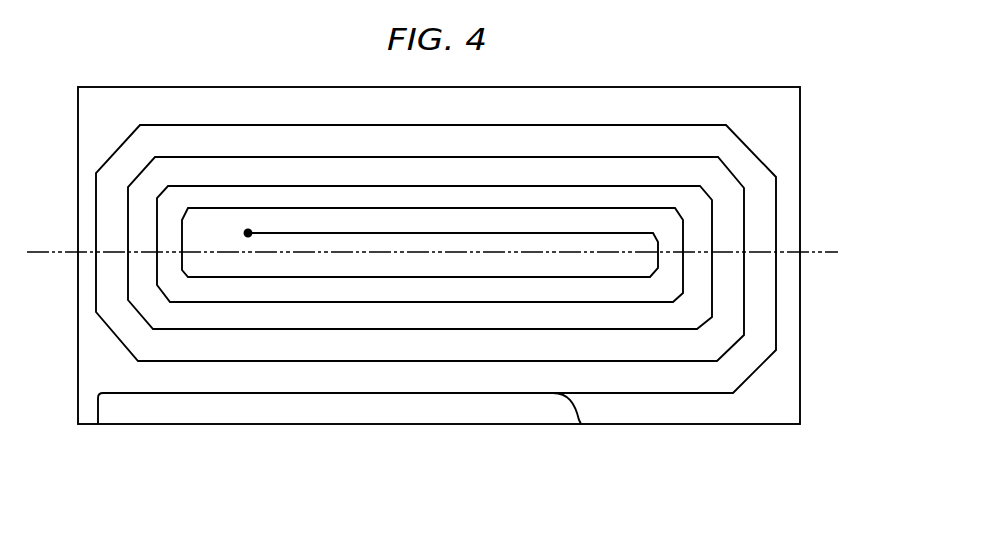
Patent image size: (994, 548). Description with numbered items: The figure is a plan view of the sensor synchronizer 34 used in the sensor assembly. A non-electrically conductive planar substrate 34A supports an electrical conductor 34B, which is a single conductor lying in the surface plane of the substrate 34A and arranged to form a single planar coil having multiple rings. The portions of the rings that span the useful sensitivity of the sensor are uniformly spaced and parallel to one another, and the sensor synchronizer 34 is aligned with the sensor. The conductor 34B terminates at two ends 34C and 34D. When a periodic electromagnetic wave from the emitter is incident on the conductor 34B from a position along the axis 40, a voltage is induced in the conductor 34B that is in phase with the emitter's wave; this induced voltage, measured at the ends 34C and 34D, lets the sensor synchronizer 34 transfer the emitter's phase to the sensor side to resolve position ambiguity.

The sensor synchronizer 34 is at (713, 496).
The non-electrically conductive planar substrate 34A is at (278, 410).
The electrical conductor 34B is at (581, 424).
The end of conductor 34C is at (248, 233).
The end of conductor 34D is at (99, 424).
The axis 40 is at (817, 252).